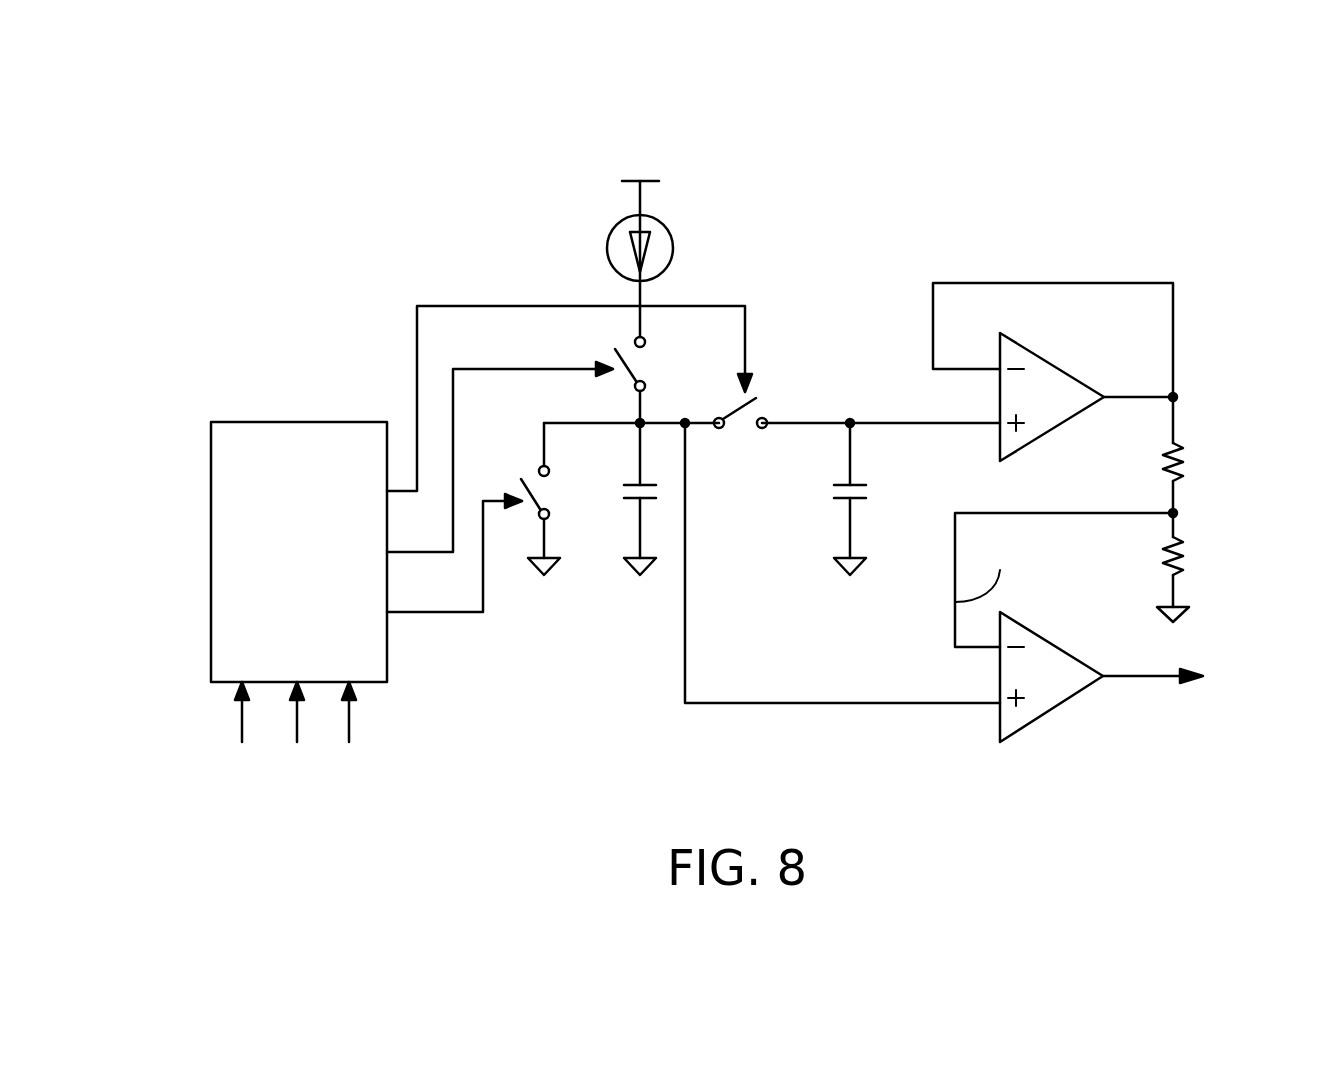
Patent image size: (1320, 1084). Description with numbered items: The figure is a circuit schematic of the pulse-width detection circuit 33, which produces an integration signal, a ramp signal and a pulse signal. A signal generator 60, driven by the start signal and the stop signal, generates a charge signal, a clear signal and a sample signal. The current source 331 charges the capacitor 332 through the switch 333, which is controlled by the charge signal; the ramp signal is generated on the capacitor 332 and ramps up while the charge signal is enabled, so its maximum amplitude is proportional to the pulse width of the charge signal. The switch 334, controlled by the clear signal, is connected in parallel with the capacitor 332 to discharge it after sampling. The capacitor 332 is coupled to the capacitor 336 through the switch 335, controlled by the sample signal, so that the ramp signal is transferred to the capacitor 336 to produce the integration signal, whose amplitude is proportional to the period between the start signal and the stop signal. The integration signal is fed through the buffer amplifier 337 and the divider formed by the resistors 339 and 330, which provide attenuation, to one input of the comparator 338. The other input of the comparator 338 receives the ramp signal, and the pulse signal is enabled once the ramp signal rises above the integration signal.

The pulse-width detection circuit 33 is at (1182, 202).
The signal generator 60 is at (258, 420).
The current source 331 is at (674, 256).
The capacitor 332 is at (612, 492).
The switch 333 is at (648, 382).
The switch 334 is at (553, 487).
The switch 335 is at (768, 405).
The capacitor 336 is at (870, 490).
The buffer amplifier 337 is at (1063, 427).
The comparator 338 is at (1063, 708).
The resistor 339 is at (1190, 463).
The resistor 330 is at (1190, 560).